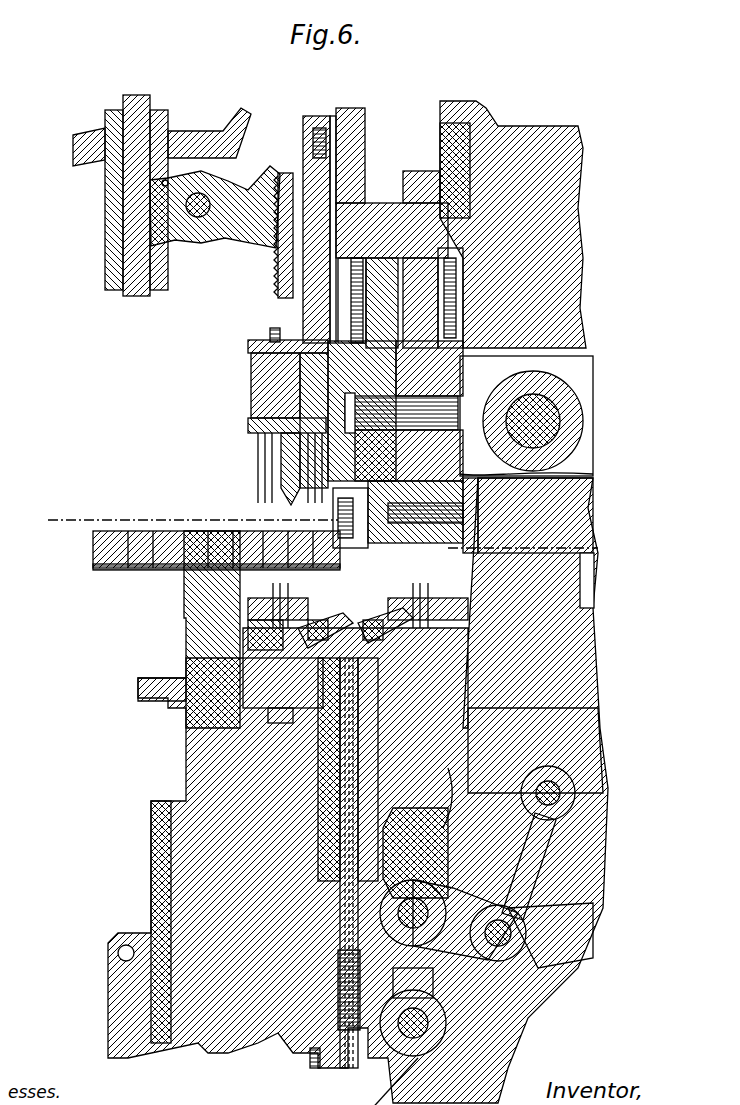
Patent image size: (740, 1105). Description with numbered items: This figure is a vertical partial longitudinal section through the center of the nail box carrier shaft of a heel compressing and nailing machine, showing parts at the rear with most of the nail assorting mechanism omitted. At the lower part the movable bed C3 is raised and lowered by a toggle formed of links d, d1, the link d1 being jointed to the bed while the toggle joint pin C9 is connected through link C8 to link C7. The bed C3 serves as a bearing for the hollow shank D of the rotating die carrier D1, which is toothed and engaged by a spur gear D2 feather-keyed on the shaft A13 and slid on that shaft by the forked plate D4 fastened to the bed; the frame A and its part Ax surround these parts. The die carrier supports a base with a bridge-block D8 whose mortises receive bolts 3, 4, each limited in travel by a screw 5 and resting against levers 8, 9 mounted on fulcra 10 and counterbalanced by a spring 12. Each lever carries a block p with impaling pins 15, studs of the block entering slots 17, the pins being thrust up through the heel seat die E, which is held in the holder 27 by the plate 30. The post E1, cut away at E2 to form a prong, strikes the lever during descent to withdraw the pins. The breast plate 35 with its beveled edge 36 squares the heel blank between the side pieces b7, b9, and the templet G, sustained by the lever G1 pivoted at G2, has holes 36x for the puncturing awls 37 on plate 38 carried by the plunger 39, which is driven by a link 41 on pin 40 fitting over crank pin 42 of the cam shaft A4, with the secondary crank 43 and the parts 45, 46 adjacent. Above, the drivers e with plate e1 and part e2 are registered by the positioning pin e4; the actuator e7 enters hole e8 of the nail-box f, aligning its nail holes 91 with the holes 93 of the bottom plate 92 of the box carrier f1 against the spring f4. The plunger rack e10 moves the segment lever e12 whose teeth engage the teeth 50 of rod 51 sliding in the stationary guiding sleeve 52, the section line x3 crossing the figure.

The stationary guiding sleeve 52 is at (98, 183).
The rod 51 is at (130, 92).
The teeth of rod 50 is at (165, 155).
The segment lever e12 is at (245, 185).
The rack e10 is at (268, 260).
The positioning pin e4 is at (262, 300).
The toothed plate 46 is at (300, 108).
The column 45 is at (355, 105).
The secondary crank 43 is at (357, 130).
The crank pin 42 is at (405, 175).
The link 41 is at (470, 325).
The cam shaft A4 is at (572, 165).
The part of driver bar e2 is at (243, 378).
The plate e1 is at (240, 418).
The prongs e is at (250, 446).
The nail-box actuator e7 is at (290, 462).
The hole in nail-box e8 is at (125, 512).
The plunger 39 is at (455, 428).
The pin 40 is at (460, 395).
The lever G1 is at (578, 360).
The pivot G2 is at (548, 405).
The plate 38 is at (480, 470).
The puncturing awls 37 is at (470, 478).
The templet G is at (570, 486).
The frame A is at (590, 648).
The block p is at (585, 662).
The breast plate 35 is at (470, 552).
The holes of templet 36x is at (465, 530).
The beveled edge 36 is at (590, 588).
The part b7 is at (585, 578).
The section line x3 is at (347, 533).
The heel seat die E is at (128, 590).
The nail-box f is at (295, 525).
The nail holes 91 is at (318, 528).
The spring f4 is at (178, 523).
The bridge-block D8 is at (275, 560).
The holes of bottom plate 93 is at (160, 563).
The bottom plate 92 is at (310, 563).
The box carrier f1 is at (110, 565).
The impaling pins 15 is at (285, 592).
The holder 27 is at (240, 614).
The plate 30 is at (240, 626).
The lever 8 is at (290, 628).
The slots 17 is at (300, 648).
The screw 5 is at (290, 640).
The bolt 3 is at (332, 605).
The bolt 4 is at (355, 600).
The side pieces b9 is at (361, 573).
The spring 12 is at (300, 735).
The spur gear D2 is at (130, 692).
The forked plate D4 is at (235, 732).
The shaft A13 is at (185, 760).
The fulcra 10 is at (275, 710).
The die carrier D1 is at (280, 732).
The cut-away prong E2 is at (305, 760).
The hollow shank D is at (330, 818).
The frame part Ax is at (148, 872).
The post E1 is at (330, 925).
The movable bed C3 is at (445, 758).
The lever 9 is at (445, 765).
The toggle link d1 is at (425, 840).
The link C7 is at (547, 867).
The pin C9 is at (430, 900).
The link C8 is at (470, 960).
The toggle link d is at (430, 990).